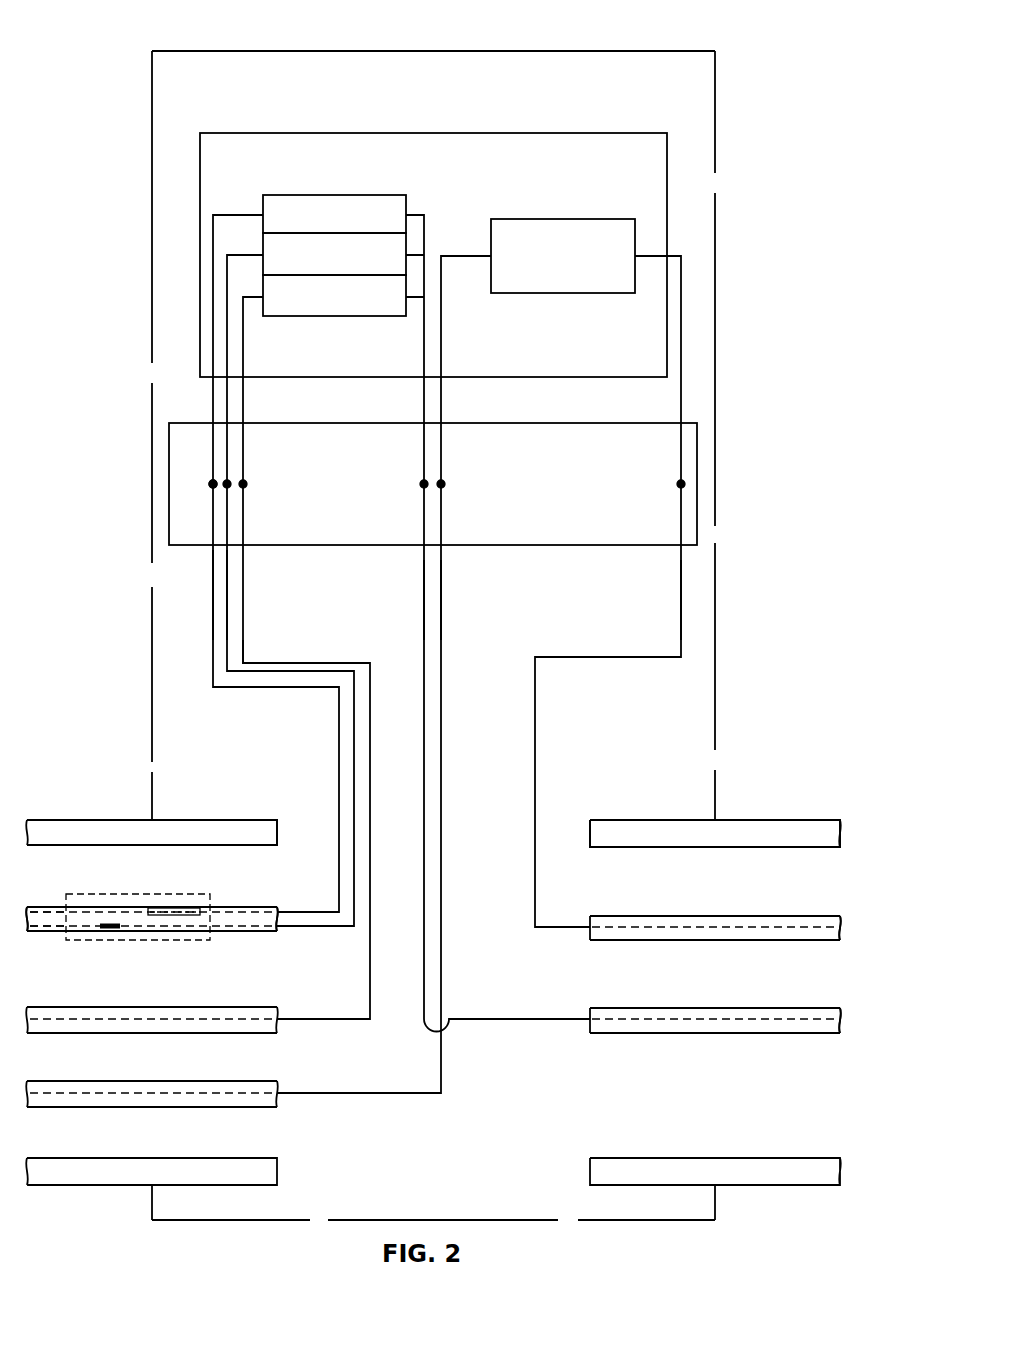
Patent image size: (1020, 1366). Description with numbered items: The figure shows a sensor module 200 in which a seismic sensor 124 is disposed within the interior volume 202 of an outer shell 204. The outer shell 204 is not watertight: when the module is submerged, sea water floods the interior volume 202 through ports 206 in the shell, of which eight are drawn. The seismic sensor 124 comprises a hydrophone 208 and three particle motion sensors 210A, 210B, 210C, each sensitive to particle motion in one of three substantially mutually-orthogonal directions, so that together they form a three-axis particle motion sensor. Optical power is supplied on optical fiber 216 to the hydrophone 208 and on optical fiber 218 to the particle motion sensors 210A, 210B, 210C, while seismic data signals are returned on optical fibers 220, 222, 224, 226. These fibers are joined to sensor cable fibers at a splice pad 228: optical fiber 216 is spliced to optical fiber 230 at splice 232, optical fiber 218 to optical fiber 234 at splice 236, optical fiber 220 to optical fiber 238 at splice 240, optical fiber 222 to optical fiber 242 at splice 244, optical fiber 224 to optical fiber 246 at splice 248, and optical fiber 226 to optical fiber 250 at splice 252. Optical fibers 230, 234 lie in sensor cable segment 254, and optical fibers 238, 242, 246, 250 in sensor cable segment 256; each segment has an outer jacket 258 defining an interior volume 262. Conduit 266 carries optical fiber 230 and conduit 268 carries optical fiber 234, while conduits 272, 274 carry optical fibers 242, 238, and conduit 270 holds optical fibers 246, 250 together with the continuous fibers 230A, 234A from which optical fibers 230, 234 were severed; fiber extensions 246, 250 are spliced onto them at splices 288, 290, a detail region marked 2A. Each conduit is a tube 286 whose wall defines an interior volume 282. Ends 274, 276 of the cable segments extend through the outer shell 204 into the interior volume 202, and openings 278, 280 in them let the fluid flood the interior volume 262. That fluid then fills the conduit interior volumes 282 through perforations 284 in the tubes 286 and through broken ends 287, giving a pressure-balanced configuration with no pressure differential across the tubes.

The sensor module 200 is at (124, 32).
The interior volume 202 is at (266, 86).
The seismic sensor 124 is at (260, 132).
The outer shell 204 is at (152, 162).
The ports 206 is at (152, 372).
The optical fiber 226 is at (213, 245).
The optical fiber 224 is at (227, 295).
The particle motion sensor 210A is at (362, 226).
The particle motion sensor 210B is at (362, 267).
The particle motion sensor 210C is at (362, 308).
The hydrophone 208 is at (576, 219).
The optical fiber 222 is at (243, 363).
The optical fiber 218 is at (424, 365).
The optical fiber 220 is at (441, 365).
The optical fiber 216 is at (681, 384).
The splice pad 228 is at (581, 423).
The splice 248 is at (213, 484).
The splice 252 is at (213, 484).
The splice 244 is at (243, 484).
The splice 236 is at (424, 484).
The splice 240 is at (441, 484).
The splice 232 is at (681, 484).
The optical fiber 234 is at (424, 599).
The optical fiber 238 is at (441, 599).
The optical fiber 230 is at (681, 599).
The optical fiber 250 is at (213, 574).
The optical fiber 246 is at (227, 604).
The optical fiber 242 is at (314, 663).
The sensor cable segment 256 is at (65, 820).
The end 276 is at (270, 818).
The end 274 is at (200, 1109).
The sensor cable segment 254 is at (830, 818).
The opening 280 is at (303, 888).
The opening 278 is at (600, 887).
The optical fiber 230A is at (62, 910).
The optical fiber 234A is at (64, 932).
The section view 2A is at (66, 940).
The tube 286 is at (81, 908).
The splice 288 is at (109, 918).
The splice 290 is at (170, 906).
The perforations 284 is at (211, 908).
The interior volume 282 is at (260, 906).
The conduit 270 is at (258, 935).
The broken ends 287 is at (283, 934).
The conduit 272 is at (232, 1038).
The conduit 266 is at (817, 943).
The conduit 268 is at (773, 1038).
The interior volume 262 is at (80, 1142).
The outer jacket 258 is at (38, 1187).